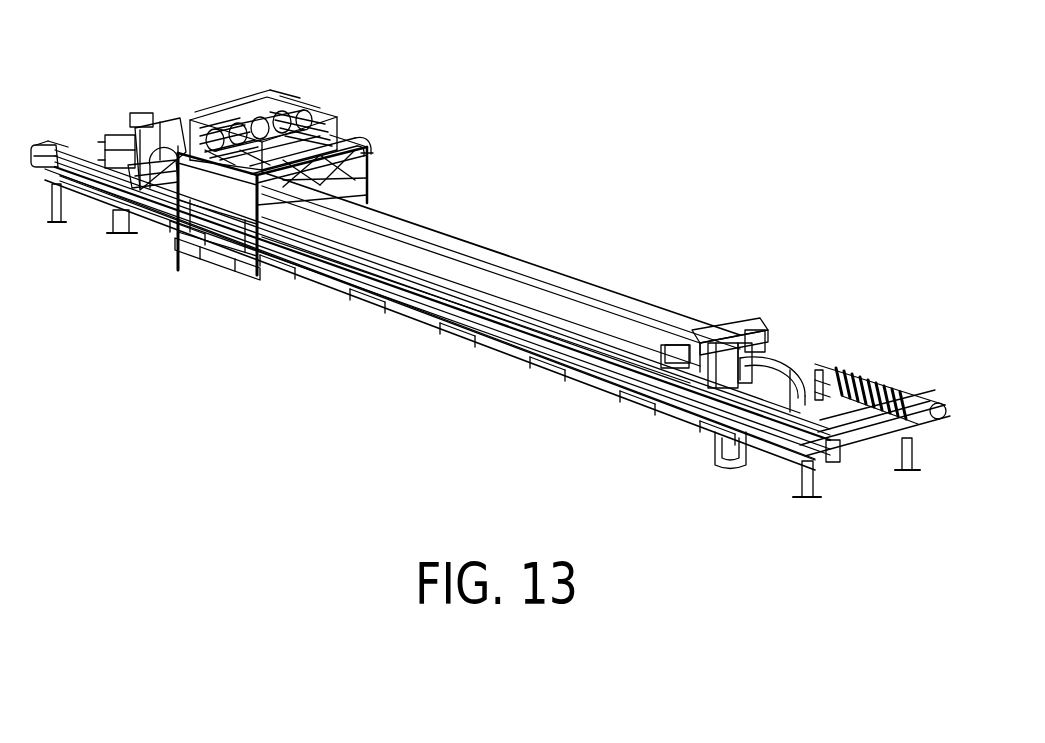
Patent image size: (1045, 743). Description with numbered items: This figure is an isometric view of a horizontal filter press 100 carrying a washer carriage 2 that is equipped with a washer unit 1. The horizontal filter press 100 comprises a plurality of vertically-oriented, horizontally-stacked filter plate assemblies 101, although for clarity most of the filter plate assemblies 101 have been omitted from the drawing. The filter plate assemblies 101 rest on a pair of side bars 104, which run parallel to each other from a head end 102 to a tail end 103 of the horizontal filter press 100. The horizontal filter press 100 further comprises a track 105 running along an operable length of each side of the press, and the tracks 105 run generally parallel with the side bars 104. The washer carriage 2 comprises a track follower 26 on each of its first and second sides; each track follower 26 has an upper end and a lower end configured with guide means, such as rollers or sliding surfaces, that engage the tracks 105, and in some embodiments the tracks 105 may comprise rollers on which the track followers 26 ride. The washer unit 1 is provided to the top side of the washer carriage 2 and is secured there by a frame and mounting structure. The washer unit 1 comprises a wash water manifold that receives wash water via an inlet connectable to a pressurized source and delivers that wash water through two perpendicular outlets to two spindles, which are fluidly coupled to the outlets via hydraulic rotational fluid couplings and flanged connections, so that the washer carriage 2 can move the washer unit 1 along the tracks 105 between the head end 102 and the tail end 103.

The washer unit 1 is at (318, 108).
The washer carriage 2 is at (375, 183).
The track follower 26 is at (206, 266).
The horizontal filter press 100 is at (514, 147).
The filter plate assembly 101 is at (150, 171).
The head end 102 is at (130, 95).
The tail end 103 is at (715, 302).
The side bar 104 is at (510, 307).
The track 105 is at (349, 311).